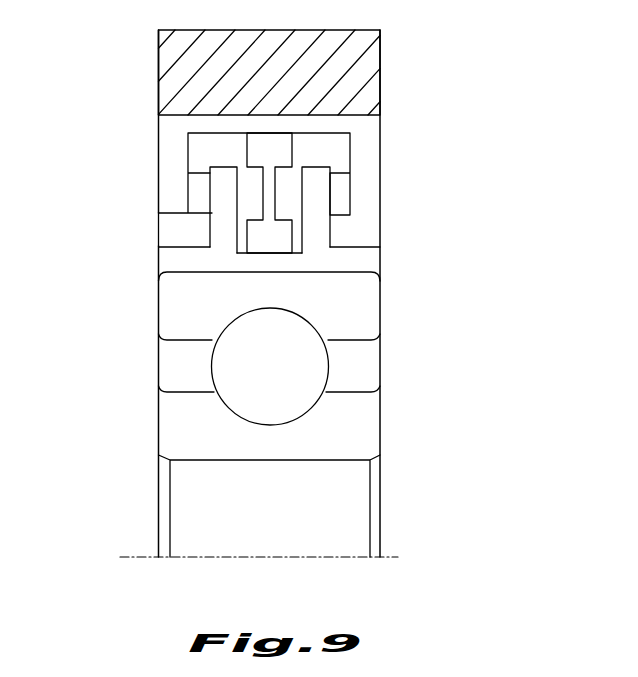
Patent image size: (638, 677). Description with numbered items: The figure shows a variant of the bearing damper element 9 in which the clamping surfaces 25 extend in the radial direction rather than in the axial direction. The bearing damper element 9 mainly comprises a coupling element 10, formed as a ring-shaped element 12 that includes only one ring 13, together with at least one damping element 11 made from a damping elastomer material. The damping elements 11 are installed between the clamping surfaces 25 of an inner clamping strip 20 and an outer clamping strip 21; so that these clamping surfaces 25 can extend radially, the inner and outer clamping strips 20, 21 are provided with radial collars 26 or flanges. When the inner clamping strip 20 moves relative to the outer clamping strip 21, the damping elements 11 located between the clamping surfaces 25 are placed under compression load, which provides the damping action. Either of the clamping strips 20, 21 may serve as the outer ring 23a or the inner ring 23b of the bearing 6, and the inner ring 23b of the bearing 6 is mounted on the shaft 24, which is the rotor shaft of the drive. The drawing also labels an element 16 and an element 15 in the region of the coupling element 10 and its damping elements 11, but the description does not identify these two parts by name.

The bearing damper element 9 is at (88, 92).
The outer clamping strip 21 is at (370, 124).
The ring-shaped element 12 is at (452, 167).
The coupling element 10 is at (310, 193).
The upper member 16 is at (292, 151).
The damping element 11 is at (192, 198).
The ring 13 is at (280, 192).
The lower face 15 is at (293, 252).
The clamping surface 25 is at (188, 169).
The radial collar 26 is at (165, 211).
The bearing 6 is at (441, 363).
The inner clamping strip 20 is at (360, 259).
The outer ring 23a is at (363, 305).
The inner ring 23b is at (363, 432).
The shaft 24 is at (338, 495).